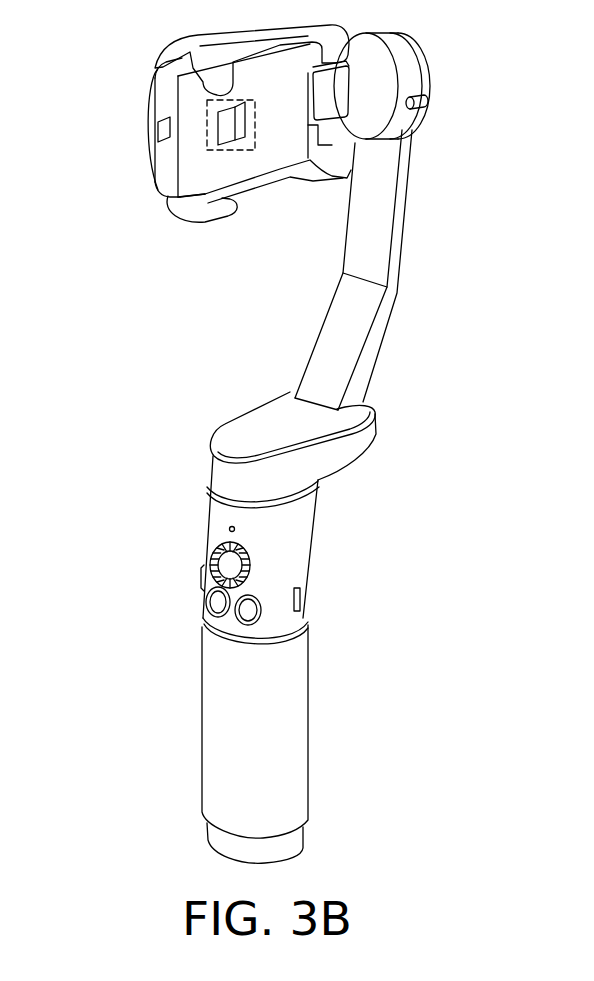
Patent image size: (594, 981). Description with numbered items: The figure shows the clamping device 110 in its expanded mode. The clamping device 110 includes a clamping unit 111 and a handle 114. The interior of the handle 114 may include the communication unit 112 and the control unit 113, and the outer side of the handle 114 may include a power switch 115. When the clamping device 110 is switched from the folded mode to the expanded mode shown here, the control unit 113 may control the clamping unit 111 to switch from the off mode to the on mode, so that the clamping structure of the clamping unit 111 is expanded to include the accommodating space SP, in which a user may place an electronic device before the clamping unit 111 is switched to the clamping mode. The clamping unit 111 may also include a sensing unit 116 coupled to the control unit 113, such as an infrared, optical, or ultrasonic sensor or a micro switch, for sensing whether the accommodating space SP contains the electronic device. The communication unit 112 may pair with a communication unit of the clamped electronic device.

The clamping device 110 is at (326, 460).
The clamping unit 111 is at (218, 123).
The communication unit 112 is at (347, 550).
The control unit 113 is at (384, 744).
The handle 114 is at (347, 627).
The power switch 115 is at (224, 565).
The sensing unit 116 is at (207, 135).
The accommodating space SP is at (287, 145).